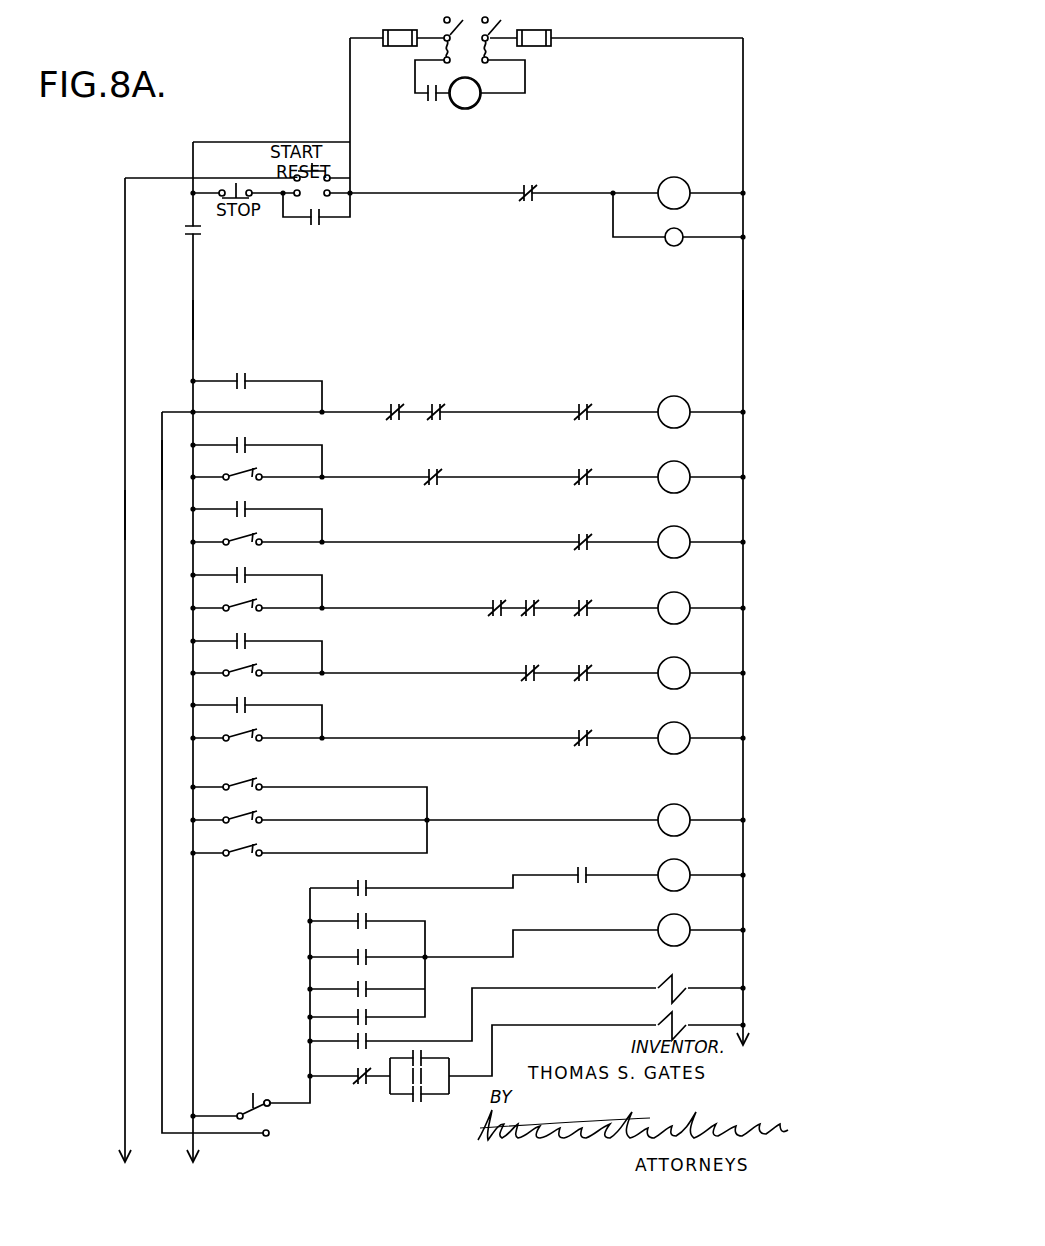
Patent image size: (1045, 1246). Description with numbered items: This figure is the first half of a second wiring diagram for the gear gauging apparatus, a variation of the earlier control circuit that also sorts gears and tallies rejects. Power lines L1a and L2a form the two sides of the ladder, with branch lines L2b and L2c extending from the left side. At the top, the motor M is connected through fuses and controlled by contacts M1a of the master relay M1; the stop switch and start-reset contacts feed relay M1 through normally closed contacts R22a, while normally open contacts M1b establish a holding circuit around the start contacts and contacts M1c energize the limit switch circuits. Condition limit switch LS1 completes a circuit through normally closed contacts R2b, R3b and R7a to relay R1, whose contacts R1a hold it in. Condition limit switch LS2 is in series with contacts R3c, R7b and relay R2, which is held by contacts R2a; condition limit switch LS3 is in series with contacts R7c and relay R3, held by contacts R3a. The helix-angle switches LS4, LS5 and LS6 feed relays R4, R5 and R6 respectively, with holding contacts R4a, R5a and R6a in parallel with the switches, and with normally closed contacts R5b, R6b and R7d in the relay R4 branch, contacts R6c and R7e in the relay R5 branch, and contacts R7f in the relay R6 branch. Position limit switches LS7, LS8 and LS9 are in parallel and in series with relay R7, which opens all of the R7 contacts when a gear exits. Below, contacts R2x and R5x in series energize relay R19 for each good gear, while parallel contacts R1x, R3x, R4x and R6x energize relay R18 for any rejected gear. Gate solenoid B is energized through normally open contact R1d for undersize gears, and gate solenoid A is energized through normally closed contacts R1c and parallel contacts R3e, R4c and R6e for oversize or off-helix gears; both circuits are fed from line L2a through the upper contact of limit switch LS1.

The motor M is at (485, 100).
The contacts of master relay M1 M1a is at (427, 98).
The normally open contacts of relay M1 M1b is at (322, 222).
The normally open contacts of relay M1 M1c is at (197, 234).
The master relay M1 is at (676, 178).
The normally closed contacts of relay R22 R22a is at (526, 190).
The line L1a is at (743, 305).
The line L2a is at (195, 324).
The supply line L2b is at (162, 464).
The supply line L2c is at (125, 514).
The normally open contacts of relay R1 R1a is at (254, 367).
The normally closed contacts of relay R2 R2b is at (391, 406).
The normally closed contacts of relay R3 R3b is at (434, 406).
The normally closed contacts of relay R7 R7a is at (580, 406).
The relay R1 is at (686, 400).
The normally open contacts of relay R2 R2a is at (246, 440).
The condition limit switch LS2 is at (230, 466).
The normally closed contacts of relay R3 R3c is at (430, 473).
The normally closed contacts of relay R7 R7b is at (580, 471).
The relay R2 is at (686, 465).
The normally open contacts of relay R3 R3a is at (246, 504).
The condition limit switch LS3 is at (230, 531).
The normally closed contacts of relay R7 R7c is at (580, 536).
The relay R3 is at (686, 530).
The normally open holding contacts of relay R4 R4a is at (246, 570).
The condition limit switch LS4 is at (230, 597).
The normally closed contacts of relay R5 R5b is at (491, 604).
The normally closed contacts of relay R6 R6b is at (526, 602).
The normally closed contacts of relay R7 R7d is at (580, 602).
The relay R4 is at (686, 596).
The normally open holding contacts of relay R5 R5a is at (246, 636).
The condition limit switch LS5 is at (230, 662).
The normally closed contacts of relay R6 R6c is at (526, 667).
The normally closed contacts of relay R7 R7e is at (580, 667).
The relay R5 is at (686, 661).
The normally open holding contacts of relay R6 R6a is at (246, 700).
The condition limit switch LS6 is at (230, 727).
The normally closed contacts of relay R7 R7f is at (580, 732).
The relay R6 is at (686, 726).
The position limit switch LS7 is at (231, 775).
The position limit switch LS8 is at (231, 809).
The position limit switch LS9 is at (231, 842).
The relay R7 is at (686, 808).
The normally open relay contacts of relay R5 R5x is at (373, 876).
The normally open relay contacts of relay R2 R2x is at (587, 869).
The relay R19 is at (686, 863).
The normally open contacts of relay R1 R1x is at (373, 909).
The normally open contacts of relay R3 R3x is at (373, 945).
The relay R18 is at (686, 918).
The normally open contacts of relay R4 R4x is at (373, 977).
The normally open contacts of relay R6 R6x is at (373, 1005).
The gate solenoid B is at (674, 982).
The normally open contact of relay R1 R1d is at (373, 1029).
The normally open contacts of relay R3 R3e is at (421, 1053).
The gate solenoid A is at (674, 1019).
The condition limit switch LS1 is at (239, 1110).
The normally closed contacts of relay R1 R1c is at (357, 1081).
The normally open contacts of relay R6 R6e is at (421, 1098).
The normally open contacts of relay R4 R4c is at (413, 1080).